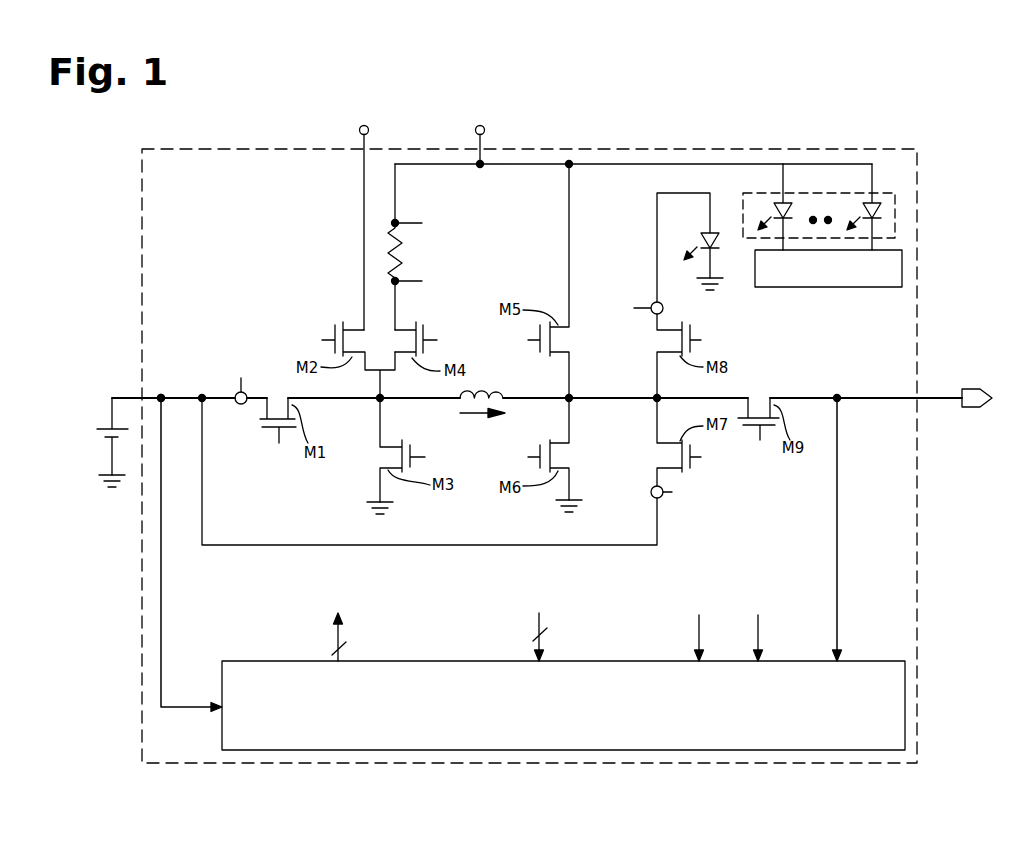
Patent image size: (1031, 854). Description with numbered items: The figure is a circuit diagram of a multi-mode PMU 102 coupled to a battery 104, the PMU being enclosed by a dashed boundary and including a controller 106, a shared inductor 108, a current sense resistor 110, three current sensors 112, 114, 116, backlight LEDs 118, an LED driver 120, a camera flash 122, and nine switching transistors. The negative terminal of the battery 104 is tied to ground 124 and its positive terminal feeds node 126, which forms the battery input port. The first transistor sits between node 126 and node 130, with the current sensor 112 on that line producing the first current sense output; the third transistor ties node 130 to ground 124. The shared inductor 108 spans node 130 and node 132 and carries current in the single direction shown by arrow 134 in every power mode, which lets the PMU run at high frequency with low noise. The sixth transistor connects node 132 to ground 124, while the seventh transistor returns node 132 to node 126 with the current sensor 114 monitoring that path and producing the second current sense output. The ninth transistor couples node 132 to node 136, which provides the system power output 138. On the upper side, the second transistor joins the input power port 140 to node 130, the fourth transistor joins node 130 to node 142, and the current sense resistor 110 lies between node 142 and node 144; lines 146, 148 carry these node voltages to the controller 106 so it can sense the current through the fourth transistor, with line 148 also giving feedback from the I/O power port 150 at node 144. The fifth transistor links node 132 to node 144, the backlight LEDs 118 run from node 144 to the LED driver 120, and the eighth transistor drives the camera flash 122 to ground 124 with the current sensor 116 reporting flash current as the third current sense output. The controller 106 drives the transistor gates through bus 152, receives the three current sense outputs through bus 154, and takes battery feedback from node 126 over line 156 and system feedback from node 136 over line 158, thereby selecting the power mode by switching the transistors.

The multi-mode PMU 102 is at (737, 148).
The battery 104 is at (98, 428).
The controller 106 is at (868, 660).
The shared inductor 108 is at (482, 391).
The current sense resistor 110 is at (402, 250).
The current sensor 112 is at (238, 405).
The current sensor 114 is at (651, 490).
The current sensor 116 is at (651, 303).
The backlight LEDs 118 is at (762, 193).
The LED driver 120 is at (808, 288).
The camera flash 122 is at (707, 233).
The ground 124 is at (98, 472).
The node 126 is at (162, 393).
The node 130 is at (378, 403).
The node 132 is at (655, 395).
The arrow 134 is at (472, 418).
The node 136 is at (836, 394).
The system power output 138 is at (976, 408).
The input power port 140 is at (359, 130).
The node 142 is at (397, 289).
The node 144 is at (481, 168).
The line 146 is at (697, 627).
The line 148 is at (760, 620).
The I/O power port 150 is at (485, 130).
The bus 152 is at (330, 646).
The bus 154 is at (533, 628).
The line 156 is at (163, 628).
The line 158 is at (836, 525).